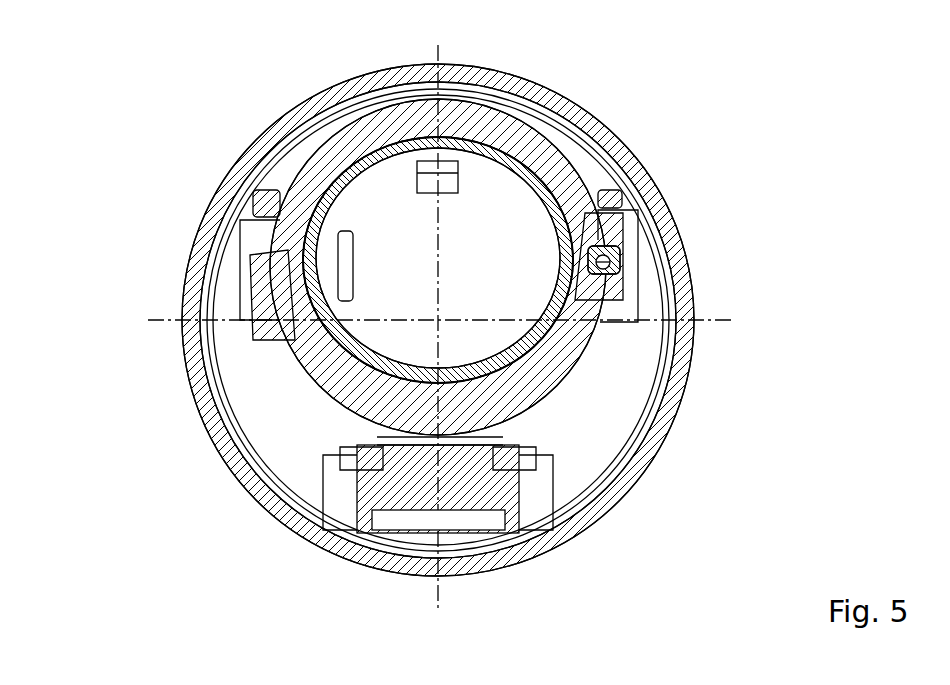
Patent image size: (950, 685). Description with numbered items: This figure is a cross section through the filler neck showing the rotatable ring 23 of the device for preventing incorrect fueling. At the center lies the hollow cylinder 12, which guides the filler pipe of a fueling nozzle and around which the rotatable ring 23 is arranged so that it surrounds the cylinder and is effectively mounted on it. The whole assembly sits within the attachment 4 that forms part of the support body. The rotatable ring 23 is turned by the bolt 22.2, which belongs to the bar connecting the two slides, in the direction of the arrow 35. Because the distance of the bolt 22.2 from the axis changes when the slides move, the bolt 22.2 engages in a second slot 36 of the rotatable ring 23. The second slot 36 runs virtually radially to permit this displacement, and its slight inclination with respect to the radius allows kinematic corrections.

The attachment 4 is at (668, 405).
The hollow cylinder 12 is at (352, 343).
The rotatable ring 23 is at (573, 197).
The arrow 35 is at (376, 132).
The bolt 22.2 is at (590, 255).
The second slot 36 is at (593, 270).